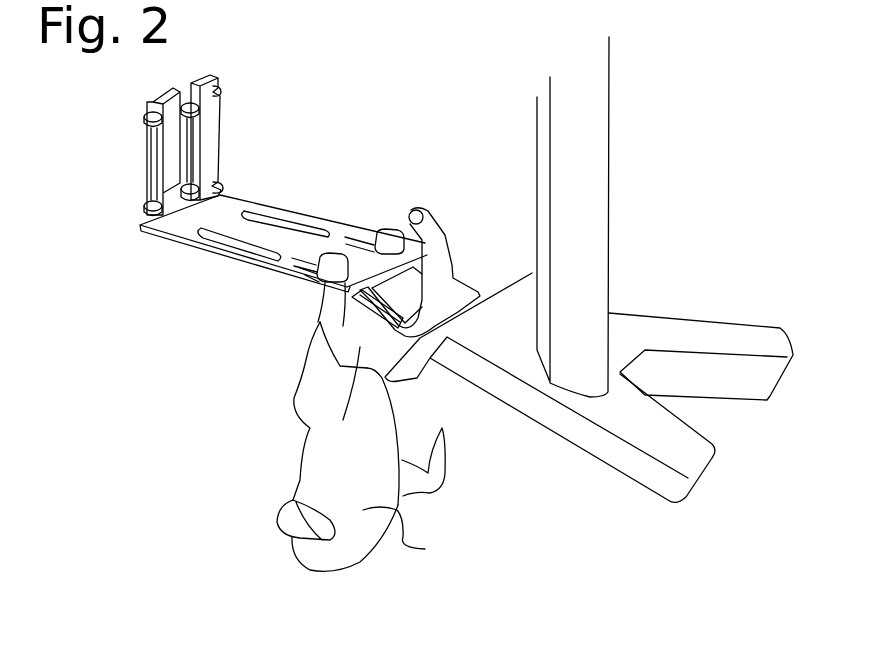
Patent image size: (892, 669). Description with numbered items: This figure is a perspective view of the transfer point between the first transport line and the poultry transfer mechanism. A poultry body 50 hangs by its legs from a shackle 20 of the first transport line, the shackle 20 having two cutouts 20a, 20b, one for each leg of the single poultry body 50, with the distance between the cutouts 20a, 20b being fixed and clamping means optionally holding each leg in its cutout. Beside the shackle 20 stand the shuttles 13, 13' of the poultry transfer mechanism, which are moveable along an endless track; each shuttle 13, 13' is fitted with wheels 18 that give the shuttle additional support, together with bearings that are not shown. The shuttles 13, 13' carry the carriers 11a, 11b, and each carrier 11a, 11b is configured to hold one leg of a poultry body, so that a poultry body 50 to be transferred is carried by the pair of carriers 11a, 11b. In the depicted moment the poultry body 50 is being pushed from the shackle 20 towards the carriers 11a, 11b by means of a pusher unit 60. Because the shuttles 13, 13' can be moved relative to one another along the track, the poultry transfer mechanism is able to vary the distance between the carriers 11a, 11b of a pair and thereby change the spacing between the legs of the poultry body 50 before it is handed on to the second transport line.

The carrier 11a is at (270, 270).
The carrier 11b is at (337, 233).
The shuttle 13 is at (130, 151).
The shuttle 13' is at (232, 137).
The wheels 18 is at (144, 112).
The shackle 20 is at (436, 230).
The cutout 20a is at (323, 327).
The cutout 20b is at (455, 277).
The poultry body 50 is at (367, 427).
The pusher unit 60 is at (635, 296).